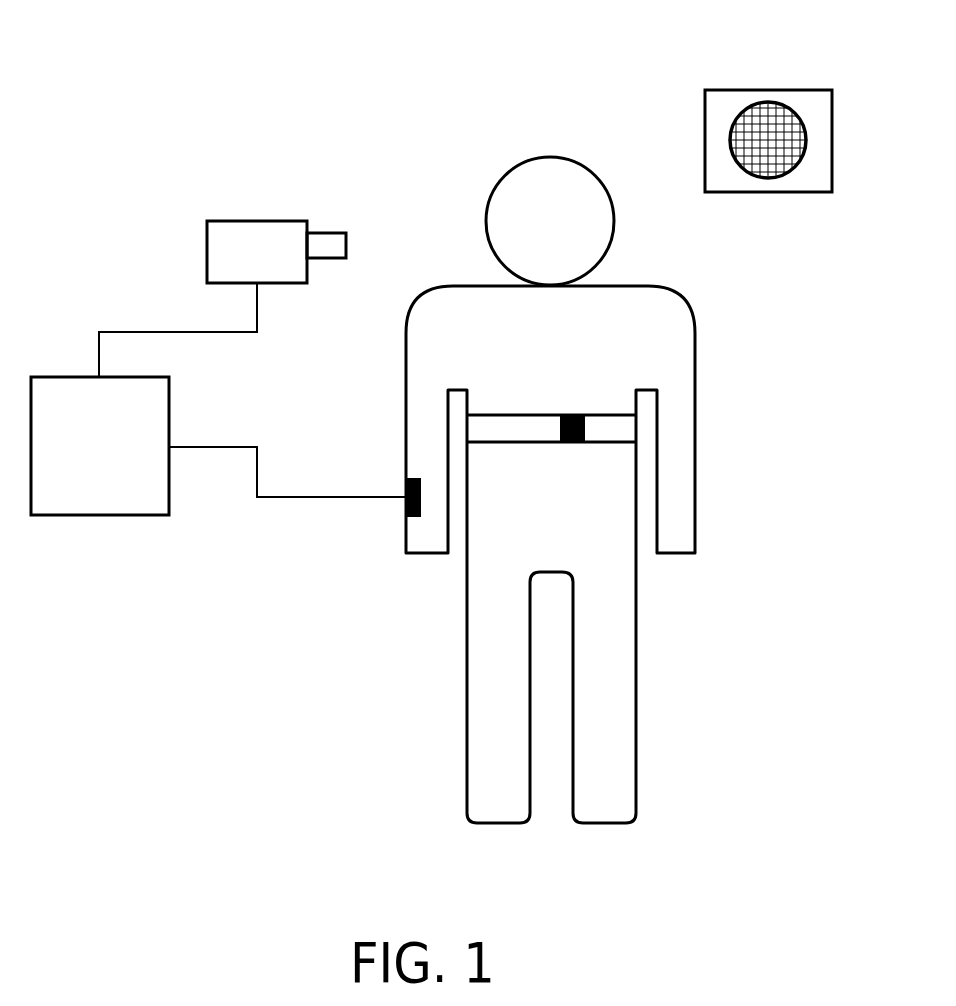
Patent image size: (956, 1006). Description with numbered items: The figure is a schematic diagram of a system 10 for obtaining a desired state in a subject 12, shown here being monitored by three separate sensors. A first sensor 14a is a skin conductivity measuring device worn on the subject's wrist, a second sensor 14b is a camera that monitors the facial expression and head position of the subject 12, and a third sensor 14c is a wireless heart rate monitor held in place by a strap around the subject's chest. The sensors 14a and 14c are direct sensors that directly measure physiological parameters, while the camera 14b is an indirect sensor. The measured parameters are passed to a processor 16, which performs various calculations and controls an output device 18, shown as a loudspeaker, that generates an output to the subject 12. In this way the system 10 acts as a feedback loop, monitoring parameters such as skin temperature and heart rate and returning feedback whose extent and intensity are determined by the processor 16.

The system 10 is at (126, 80).
The subject 12 is at (637, 692).
The first sensor 14a is at (407, 510).
The second sensor 14b is at (257, 221).
The third sensor 14c is at (573, 443).
The processor 16 is at (99, 516).
The output device 18 is at (767, 90).